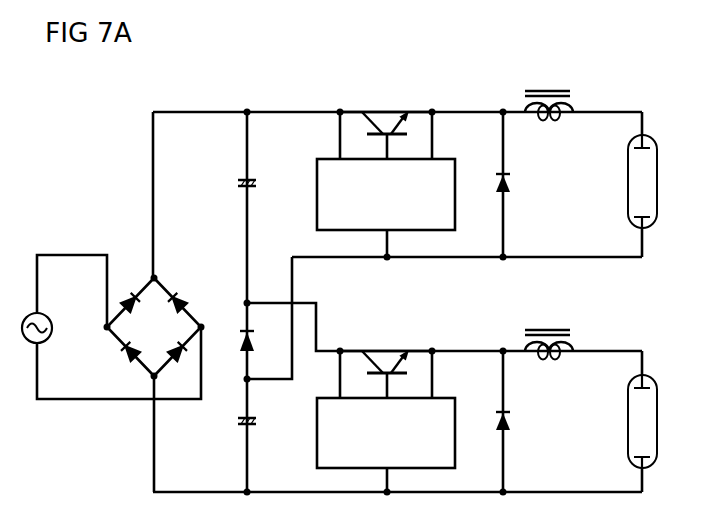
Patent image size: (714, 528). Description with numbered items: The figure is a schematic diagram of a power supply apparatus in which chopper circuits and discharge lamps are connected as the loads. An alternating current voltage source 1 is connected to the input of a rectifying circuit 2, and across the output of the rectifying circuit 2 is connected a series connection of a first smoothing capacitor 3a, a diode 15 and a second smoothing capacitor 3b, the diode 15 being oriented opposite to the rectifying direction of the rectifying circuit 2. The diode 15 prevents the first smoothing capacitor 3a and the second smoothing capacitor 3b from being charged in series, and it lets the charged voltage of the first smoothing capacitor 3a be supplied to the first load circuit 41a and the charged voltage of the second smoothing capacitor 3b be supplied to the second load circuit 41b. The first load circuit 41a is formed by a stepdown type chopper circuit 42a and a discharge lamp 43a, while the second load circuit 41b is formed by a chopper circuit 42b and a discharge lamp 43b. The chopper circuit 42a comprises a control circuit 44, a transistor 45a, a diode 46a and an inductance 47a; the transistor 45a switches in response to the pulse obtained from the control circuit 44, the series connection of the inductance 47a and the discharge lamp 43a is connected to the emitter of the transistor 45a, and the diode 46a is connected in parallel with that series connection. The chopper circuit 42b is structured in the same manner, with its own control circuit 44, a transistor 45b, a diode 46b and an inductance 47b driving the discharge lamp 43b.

The alternating current voltage source 1 is at (47, 316).
The rectifying circuit 2 is at (174, 287).
The first smoothing capacitor 3a is at (251, 182).
The second smoothing capacitor 3b is at (250, 421).
The diode 15 is at (255, 338).
The first load circuit 41a is at (552, 71).
The second load circuit 41b is at (552, 310).
The stepdown type chopper circuit 42a is at (468, 97).
The chopper circuit 42b is at (480, 334).
The discharge lamp 43a is at (652, 191).
The discharge lamp 43b is at (652, 427).
The control circuit 44 is at (442, 160).
The transistor 45a is at (378, 123).
The transistor 45b is at (380, 362).
The diode 46a is at (509, 184).
The diode 46b is at (509, 420).
The inductance 47a is at (554, 92).
The inductance 47b is at (554, 331).